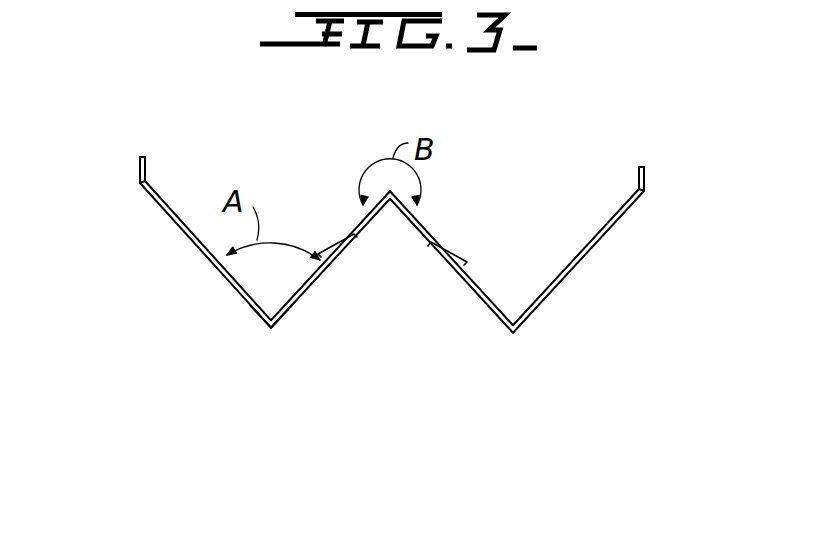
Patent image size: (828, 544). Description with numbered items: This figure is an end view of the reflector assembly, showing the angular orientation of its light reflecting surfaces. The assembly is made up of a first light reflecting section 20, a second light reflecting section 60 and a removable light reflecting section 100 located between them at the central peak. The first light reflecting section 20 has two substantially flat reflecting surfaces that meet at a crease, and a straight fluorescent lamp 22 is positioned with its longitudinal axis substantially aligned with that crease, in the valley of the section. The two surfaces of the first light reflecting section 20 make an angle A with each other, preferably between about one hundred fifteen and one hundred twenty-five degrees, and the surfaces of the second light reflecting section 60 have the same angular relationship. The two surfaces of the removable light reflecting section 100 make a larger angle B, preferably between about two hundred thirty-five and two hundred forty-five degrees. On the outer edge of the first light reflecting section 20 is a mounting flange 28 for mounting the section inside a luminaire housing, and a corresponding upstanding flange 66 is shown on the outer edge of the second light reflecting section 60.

The first light reflecting section 20 is at (191, 240).
The straight fluorescent lamp 22 is at (280, 273).
The mounting flange 28 is at (139, 173).
The second light reflecting section 60 is at (563, 282).
The upstanding leg of second panel 66 is at (646, 185).
The removable light reflecting section 100 is at (437, 230).